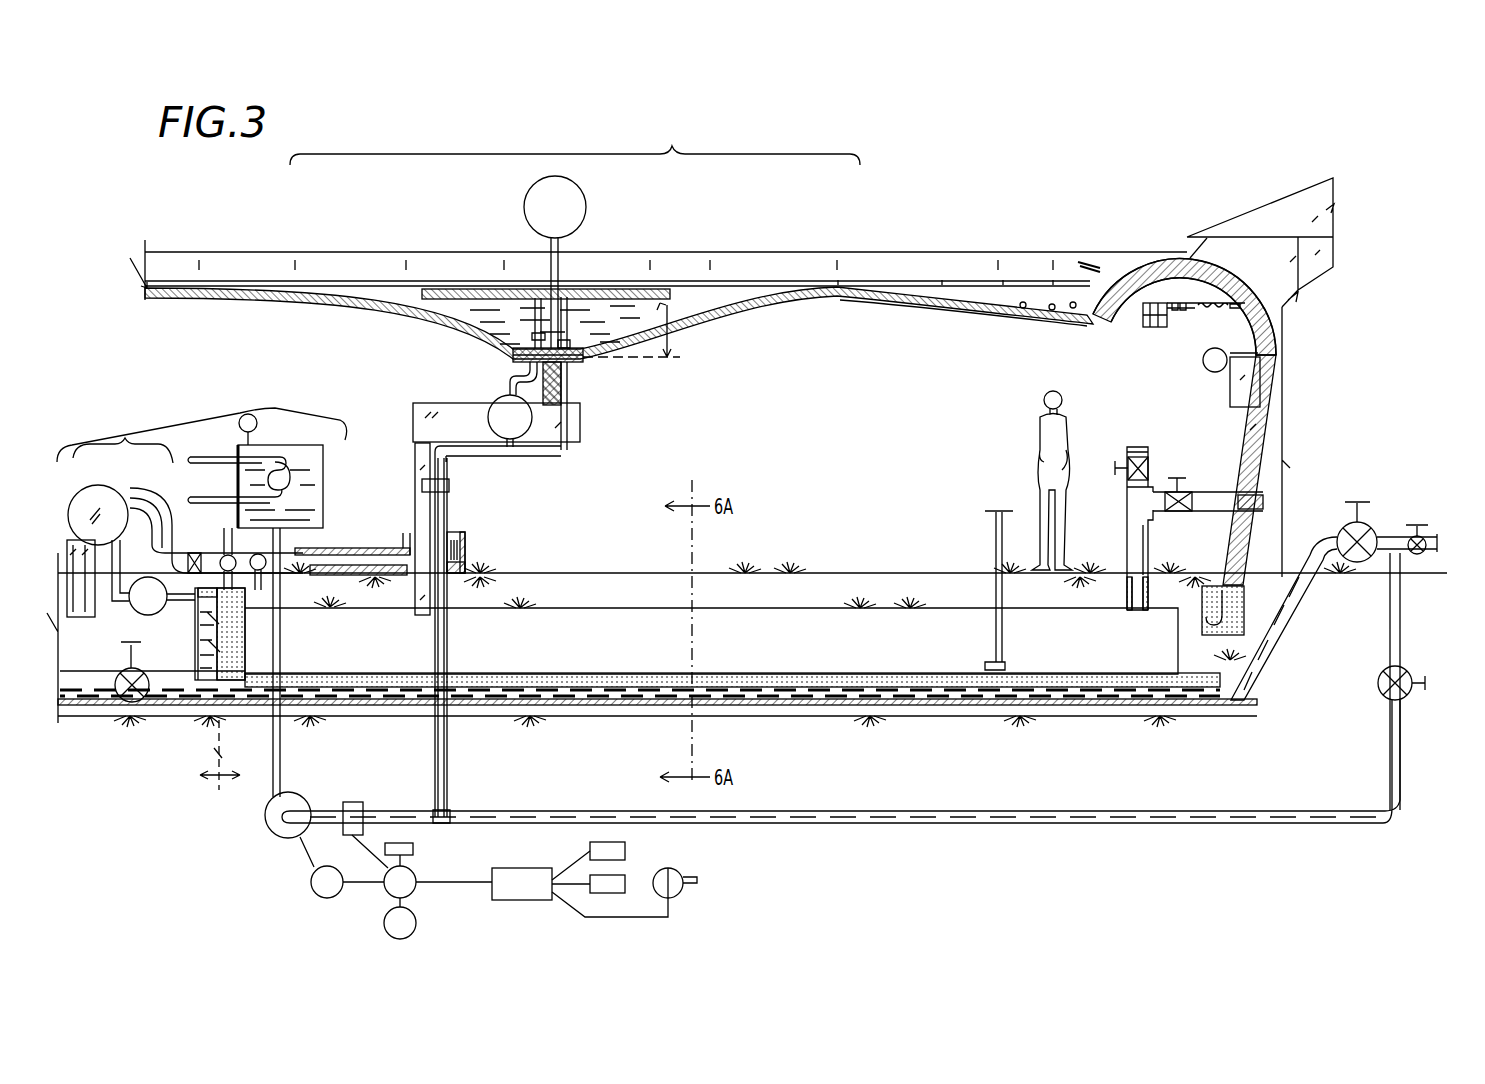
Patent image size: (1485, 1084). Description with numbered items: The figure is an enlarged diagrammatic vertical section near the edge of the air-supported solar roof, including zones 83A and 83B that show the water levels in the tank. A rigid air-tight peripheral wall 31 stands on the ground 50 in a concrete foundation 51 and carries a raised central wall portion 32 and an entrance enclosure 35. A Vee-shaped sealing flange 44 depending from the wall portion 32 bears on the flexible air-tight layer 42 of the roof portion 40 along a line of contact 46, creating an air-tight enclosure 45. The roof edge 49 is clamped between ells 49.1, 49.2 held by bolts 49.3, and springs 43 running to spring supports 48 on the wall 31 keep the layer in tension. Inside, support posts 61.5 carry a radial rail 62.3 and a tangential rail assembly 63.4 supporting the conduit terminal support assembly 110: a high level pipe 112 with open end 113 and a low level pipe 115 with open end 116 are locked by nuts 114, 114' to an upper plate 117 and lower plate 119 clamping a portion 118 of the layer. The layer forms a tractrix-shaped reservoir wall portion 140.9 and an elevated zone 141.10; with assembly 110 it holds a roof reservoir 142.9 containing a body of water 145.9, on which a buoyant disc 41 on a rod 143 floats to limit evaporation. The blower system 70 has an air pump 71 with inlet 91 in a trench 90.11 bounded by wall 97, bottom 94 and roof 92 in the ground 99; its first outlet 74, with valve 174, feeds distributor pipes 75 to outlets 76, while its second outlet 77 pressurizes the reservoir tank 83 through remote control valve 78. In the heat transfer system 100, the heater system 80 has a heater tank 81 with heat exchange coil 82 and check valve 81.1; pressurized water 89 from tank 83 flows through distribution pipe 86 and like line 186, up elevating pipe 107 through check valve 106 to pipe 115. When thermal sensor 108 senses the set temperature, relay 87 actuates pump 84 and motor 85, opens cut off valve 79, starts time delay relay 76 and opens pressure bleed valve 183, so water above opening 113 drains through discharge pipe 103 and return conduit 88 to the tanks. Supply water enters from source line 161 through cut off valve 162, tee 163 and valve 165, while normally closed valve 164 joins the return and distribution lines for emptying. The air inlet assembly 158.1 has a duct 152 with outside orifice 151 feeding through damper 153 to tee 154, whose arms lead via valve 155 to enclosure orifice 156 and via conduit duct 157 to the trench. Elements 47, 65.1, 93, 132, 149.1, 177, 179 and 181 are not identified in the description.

The peripheral wall 31 is at (1268, 425).
The raised central wall portion 32 is at (1190, 270).
The entrance enclosure 35 is at (1310, 230).
The roof portion 40 is at (999, 312).
The disc 41 is at (620, 293).
The lower complete layer 42 is at (818, 298).
The spring 43 is at (1200, 303).
The sealing flange 44 is at (1080, 300).
The enclosure 45 is at (190, 383).
The line of contact 46 is at (1080, 318).
The roof surface 47 is at (681, 325).
The spring support 48 is at (1240, 310).
The peripheral roof edge 49 is at (1168, 320).
The ell 49.1 is at (1155, 330).
The ell 49.2 is at (1165, 330).
The bolt 49.3 is at (1147, 300).
The ground 50 is at (800, 571).
The peripheral wall foundation 51 is at (1246, 603).
The support post 61.5 is at (417, 525).
The radial rail 62.3 is at (440, 405).
The tangential rail assembly 63.4 is at (572, 396).
The coupling 65.1 is at (423, 486).
The blower system 70 is at (123, 442).
The air pump 71 is at (103, 497).
The first discharge outlet 74 is at (141, 497).
The air distributor pipe 75 is at (282, 610).
The outlet 76 is at (466, 558).
The second outlet 77 is at (117, 605).
The remote control valve 78 is at (368, 717).
The cut off valve 79 is at (355, 801).
The heater system 80 is at (340, 456).
The heater tank 81 is at (324, 493).
The check valve 81.1 is at (227, 555).
The heat exchange coil 82 is at (300, 465).
The hot water reservoir tank 83 is at (191, 647).
The zone 83A is at (239, 755).
The zone 83B is at (177, 783).
The pump 84 is at (270, 820).
The drive motor 85 is at (330, 898).
The distribution pipe 86 is at (868, 675).
The relay 87 is at (417, 882).
The liquid return conduit 88 is at (965, 825).
The water 89 is at (172, 692).
The trench 90.11 is at (845, 628).
The inlet 91 is at (72, 630).
The roof 92 is at (488, 605).
The sensor 93 is at (469, 541).
The bottom 94 is at (655, 717).
The first vertical wall 97 is at (648, 644).
The ground 99 is at (1105, 751).
The heat transfer system 100 is at (202, 426).
The discharge pipe 103 is at (445, 505).
The check valve 106 is at (490, 414).
The liquid elevating pipe 107 is at (434, 507).
The thermal sensor 108 is at (568, 192).
The upper thermal fluid conduit terminal support assembly 110 is at (446, 394).
The high level vertical pipe 112 is at (568, 312).
The upper open end 113 is at (560, 300).
The nut 114 is at (516, 349).
The nut 114' is at (500, 377).
The low level vertical pipe 115 is at (535, 332).
The upper open end 116 is at (536, 300).
The upper clamping plate 117 is at (600, 353).
The portion of layer 118 is at (598, 360).
The lower clamp plate 119 is at (573, 364).
The sag depth 132 is at (668, 340).
The reservoir wall portion 140.9 is at (388, 292).
The elevated zone 141.10 is at (822, 290).
The roof reservoir 142.9 is at (575, 144).
The rod 143 is at (553, 312).
The body of water 145.9 is at (470, 307).
The roof panel 149.1 is at (300, 291).
The outside orifice 151 is at (1263, 505).
The air inlet duct 152 is at (1235, 490).
The gate valve 153 is at (1182, 489).
The tee 154 is at (1128, 498).
The valve 155 is at (1127, 456).
The enclosure orifice 156 is at (1128, 448).
The conduit duct 157 is at (1127, 548).
The air duct assembly 158.1 is at (1118, 412).
The source line 161 is at (1432, 556).
The cut off valve 162 is at (1420, 535).
The tee 163 is at (1385, 535).
The cut off valve 164 is at (1355, 520).
The valve 165 is at (1378, 684).
The valve 174 is at (200, 554).
The person 177 is at (1040, 430).
The valve stem 179 is at (128, 648).
The gauge 181 is at (239, 425).
The pressure bleed valve 183 is at (266, 562).
The line 186 is at (125, 704).